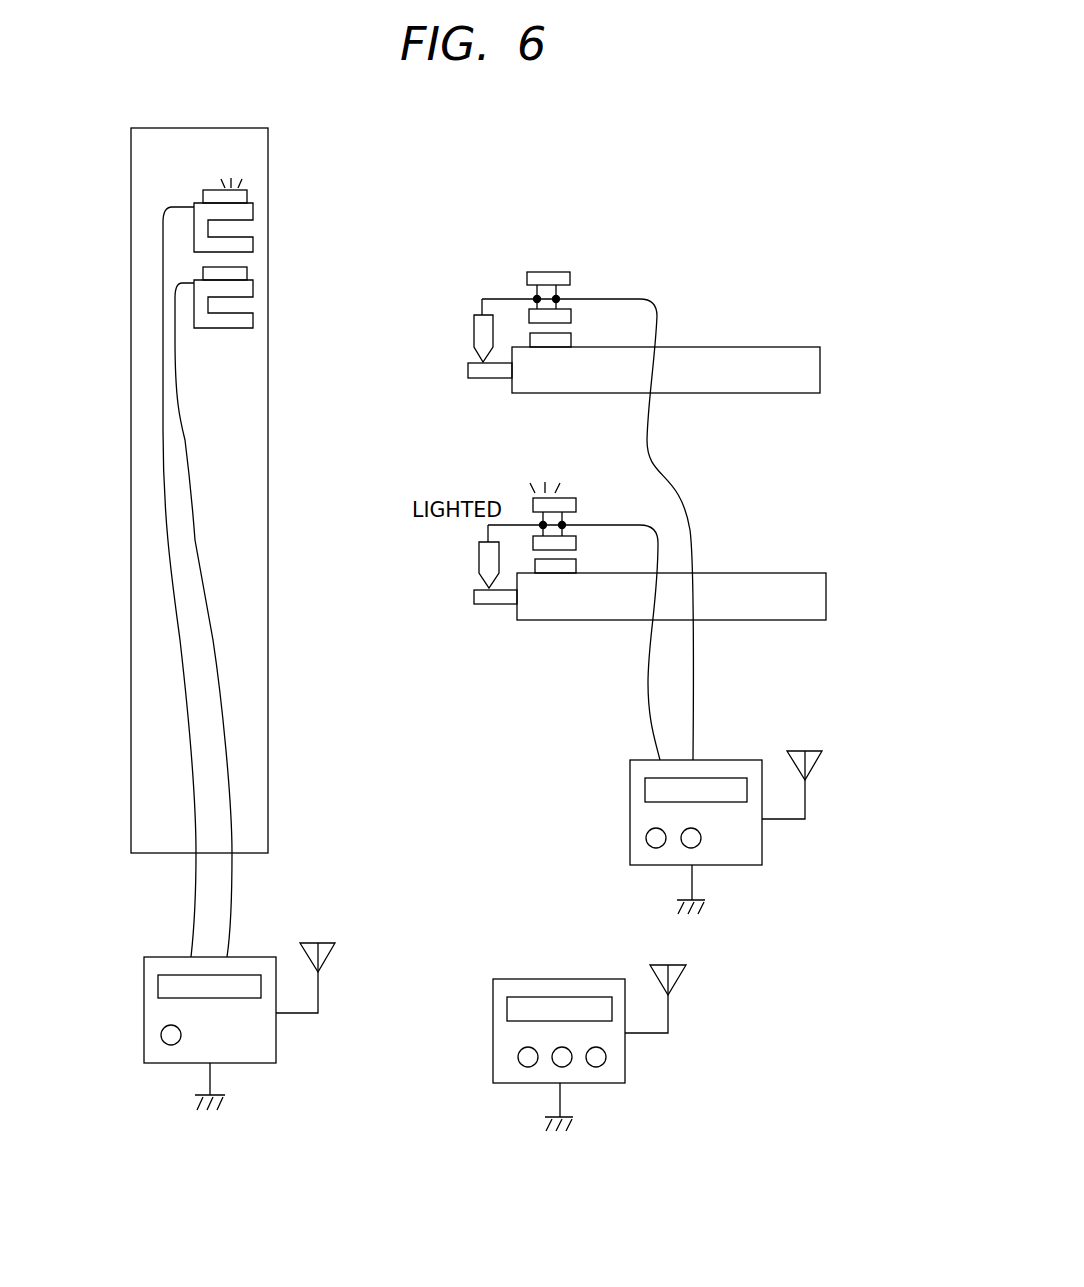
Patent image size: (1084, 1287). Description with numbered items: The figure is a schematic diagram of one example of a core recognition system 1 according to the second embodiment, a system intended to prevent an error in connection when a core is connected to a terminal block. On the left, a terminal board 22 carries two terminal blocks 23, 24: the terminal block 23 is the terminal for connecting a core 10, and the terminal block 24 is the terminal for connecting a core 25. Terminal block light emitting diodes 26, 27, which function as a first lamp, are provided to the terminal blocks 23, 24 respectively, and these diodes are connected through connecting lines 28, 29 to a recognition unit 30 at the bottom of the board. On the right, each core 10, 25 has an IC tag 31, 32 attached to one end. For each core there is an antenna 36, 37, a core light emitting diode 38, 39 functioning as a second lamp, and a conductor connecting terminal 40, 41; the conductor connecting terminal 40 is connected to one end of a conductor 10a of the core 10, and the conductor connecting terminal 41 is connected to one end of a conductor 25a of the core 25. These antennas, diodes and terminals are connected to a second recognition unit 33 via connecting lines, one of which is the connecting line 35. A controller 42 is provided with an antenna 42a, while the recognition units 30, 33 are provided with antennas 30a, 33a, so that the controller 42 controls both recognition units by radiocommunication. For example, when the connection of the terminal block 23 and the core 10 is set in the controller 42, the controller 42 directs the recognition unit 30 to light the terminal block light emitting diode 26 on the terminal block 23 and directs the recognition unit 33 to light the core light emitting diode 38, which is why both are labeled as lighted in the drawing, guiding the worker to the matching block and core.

The core recognition system 1 is at (684, 160).
The core 10 is at (758, 347).
The conductor 10a is at (492, 370).
The terminal board 22 is at (200, 128).
The terminal block 23 is at (245, 213).
The terminal block 24 is at (245, 290).
The core 25 is at (765, 573).
The conductor 25a is at (498, 604).
The terminal block light emitting diode 26 is at (245, 198).
The terminal block light emitting diode 27 is at (245, 275).
The connecting line 28 is at (180, 657).
The connecting line 29 is at (202, 565).
The recognition unit 30 is at (256, 957).
The antenna 30a is at (323, 943).
The IC tag 31 is at (565, 342).
The IC tag 32 is at (555, 573).
The recognition unit 33 is at (727, 760).
The antenna 33a is at (813, 750).
The connecting line 35 is at (653, 723).
The antenna 36 is at (565, 317).
The antenna 37 is at (570, 542).
The core light emitting diode 38 is at (547, 272).
The core light emitting diode 39 is at (567, 497).
The conductor connecting terminal 40 is at (474, 328).
The conductor connecting terminal 41 is at (480, 557).
The controller 42 is at (563, 979).
The antenna 42a is at (678, 980).